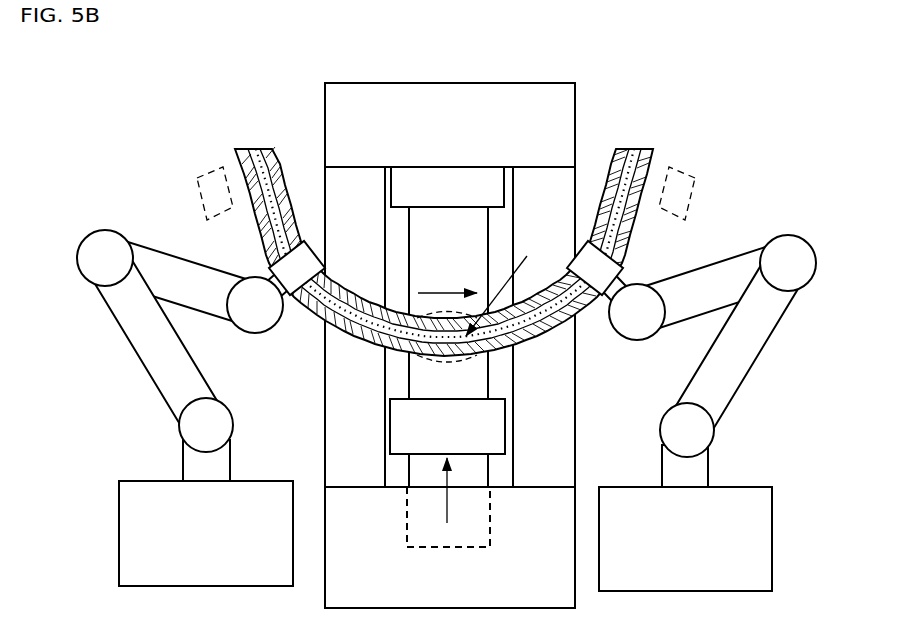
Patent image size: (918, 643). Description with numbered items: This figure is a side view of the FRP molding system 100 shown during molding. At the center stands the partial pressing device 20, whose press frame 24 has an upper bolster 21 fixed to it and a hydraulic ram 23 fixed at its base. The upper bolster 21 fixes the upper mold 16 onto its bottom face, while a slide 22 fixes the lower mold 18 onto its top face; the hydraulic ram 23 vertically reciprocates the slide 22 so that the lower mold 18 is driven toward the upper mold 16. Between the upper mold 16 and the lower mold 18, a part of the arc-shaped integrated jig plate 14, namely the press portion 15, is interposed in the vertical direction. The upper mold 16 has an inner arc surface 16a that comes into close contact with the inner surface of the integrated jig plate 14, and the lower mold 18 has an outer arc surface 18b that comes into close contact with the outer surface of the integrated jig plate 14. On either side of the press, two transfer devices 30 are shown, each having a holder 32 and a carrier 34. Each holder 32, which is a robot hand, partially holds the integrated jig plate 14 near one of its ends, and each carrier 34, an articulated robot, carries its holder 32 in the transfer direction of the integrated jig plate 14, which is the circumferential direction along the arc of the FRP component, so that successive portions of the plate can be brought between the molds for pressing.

The FRP molding system 100 is at (150, 155).
The partial pressing device 20 is at (322, 120).
The press frame 24 is at (555, 117).
The upper bolster 21 is at (463, 203).
The upper mold 16 is at (464, 270).
The inner arc surface 16a is at (428, 341).
The lower mold 18 is at (464, 392).
The outer arc surface 18b is at (335, 320).
The slide 22 is at (463, 441).
The hydraulic ram 23 is at (425, 480).
The integrated jig plate 14 is at (648, 148).
The press portion 15 is at (393, 355).
The transfer device 30 is at (88, 230).
The holder 32 is at (596, 270).
The carrier 34 is at (752, 382).